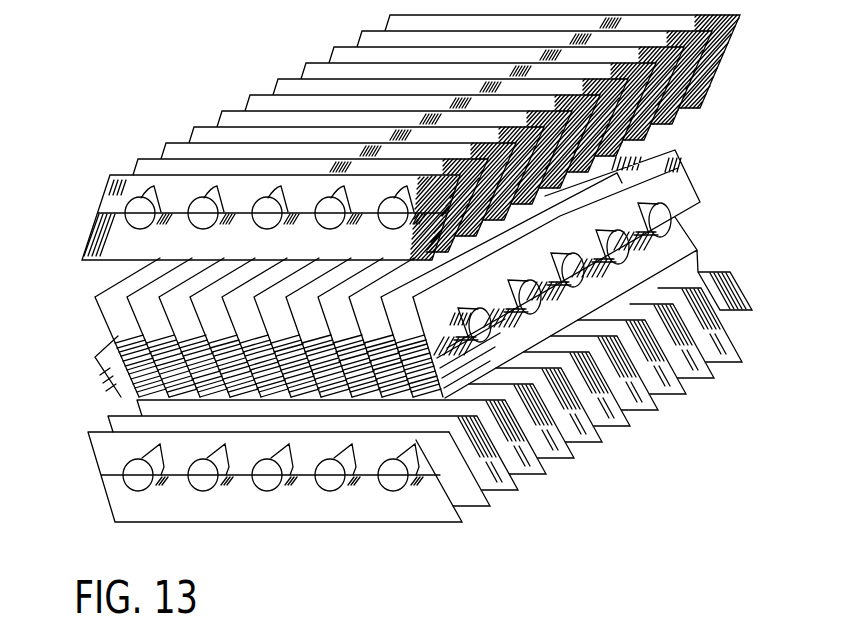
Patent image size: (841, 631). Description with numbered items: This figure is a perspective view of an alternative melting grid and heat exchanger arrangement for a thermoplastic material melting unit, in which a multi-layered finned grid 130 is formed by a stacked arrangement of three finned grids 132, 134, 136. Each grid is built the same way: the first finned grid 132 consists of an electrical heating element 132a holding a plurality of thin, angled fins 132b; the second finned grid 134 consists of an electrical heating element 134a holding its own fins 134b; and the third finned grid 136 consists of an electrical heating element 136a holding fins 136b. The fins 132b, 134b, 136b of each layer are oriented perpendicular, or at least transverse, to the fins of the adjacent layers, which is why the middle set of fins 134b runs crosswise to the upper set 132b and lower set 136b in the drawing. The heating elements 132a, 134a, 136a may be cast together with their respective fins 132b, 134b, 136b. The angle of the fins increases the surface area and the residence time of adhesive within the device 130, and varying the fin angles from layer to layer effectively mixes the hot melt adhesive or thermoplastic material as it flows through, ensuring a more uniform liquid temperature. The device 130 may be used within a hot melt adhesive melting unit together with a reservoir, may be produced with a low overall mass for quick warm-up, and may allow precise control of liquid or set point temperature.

The multi-layered finned grid 130 is at (200, 62).
The finned grid 132 is at (95, 185).
The electrical heating element 132a is at (198, 216).
The fins 132b is at (305, 63).
The finned grid 134 is at (100, 326).
The electrical heating element 134a is at (628, 249).
The fins 134b is at (625, 166).
The finned grid 136 is at (391, 532).
The electrical heating element 136a is at (262, 490).
The fins 136b is at (540, 481).